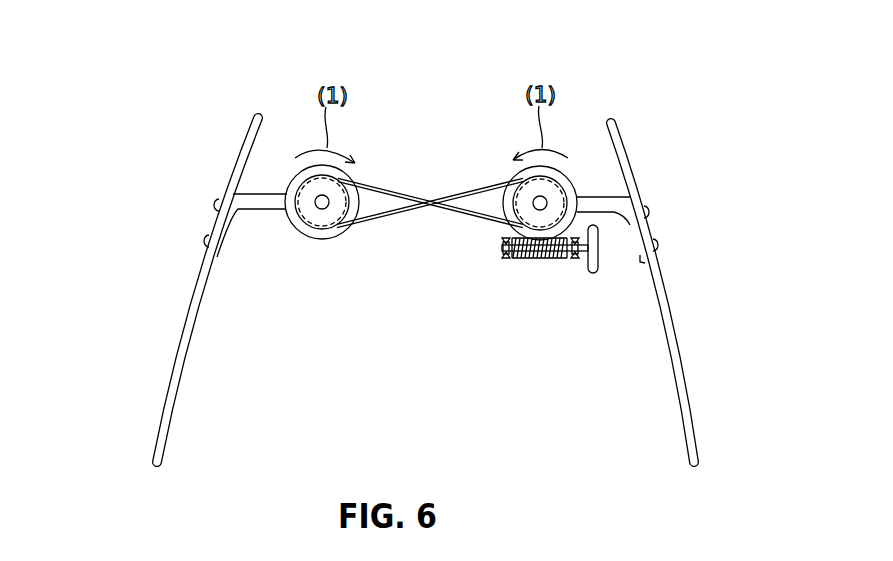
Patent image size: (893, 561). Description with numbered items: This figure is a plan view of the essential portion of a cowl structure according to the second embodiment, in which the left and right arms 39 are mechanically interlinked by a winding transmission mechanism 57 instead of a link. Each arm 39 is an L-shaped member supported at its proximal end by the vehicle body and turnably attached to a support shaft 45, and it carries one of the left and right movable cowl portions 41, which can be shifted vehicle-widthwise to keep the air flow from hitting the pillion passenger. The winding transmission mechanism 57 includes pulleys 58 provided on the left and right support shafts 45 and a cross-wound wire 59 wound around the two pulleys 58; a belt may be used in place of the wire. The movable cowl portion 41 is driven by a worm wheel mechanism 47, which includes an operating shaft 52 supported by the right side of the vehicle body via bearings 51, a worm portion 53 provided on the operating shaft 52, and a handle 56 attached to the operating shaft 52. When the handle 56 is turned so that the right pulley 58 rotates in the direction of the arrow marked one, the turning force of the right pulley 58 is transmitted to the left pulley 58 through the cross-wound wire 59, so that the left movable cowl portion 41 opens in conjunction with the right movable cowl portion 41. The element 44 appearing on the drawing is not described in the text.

The arm 39 is at (241, 210).
The movable cowl portion 41 is at (183, 320).
The pivot pin 44 is at (204, 241).
The support shaft 45 is at (318, 214).
The worm wheel mechanism 47 is at (530, 316).
The bearing 51 is at (506, 260).
The operating shaft 52 is at (500, 250).
The worm portion 53 is at (537, 260).
The handle 56 is at (610, 303).
The winding transmission mechanism 57 is at (430, 196).
The pulley 58 is at (300, 189).
The cross-wound wire 59 is at (387, 217).